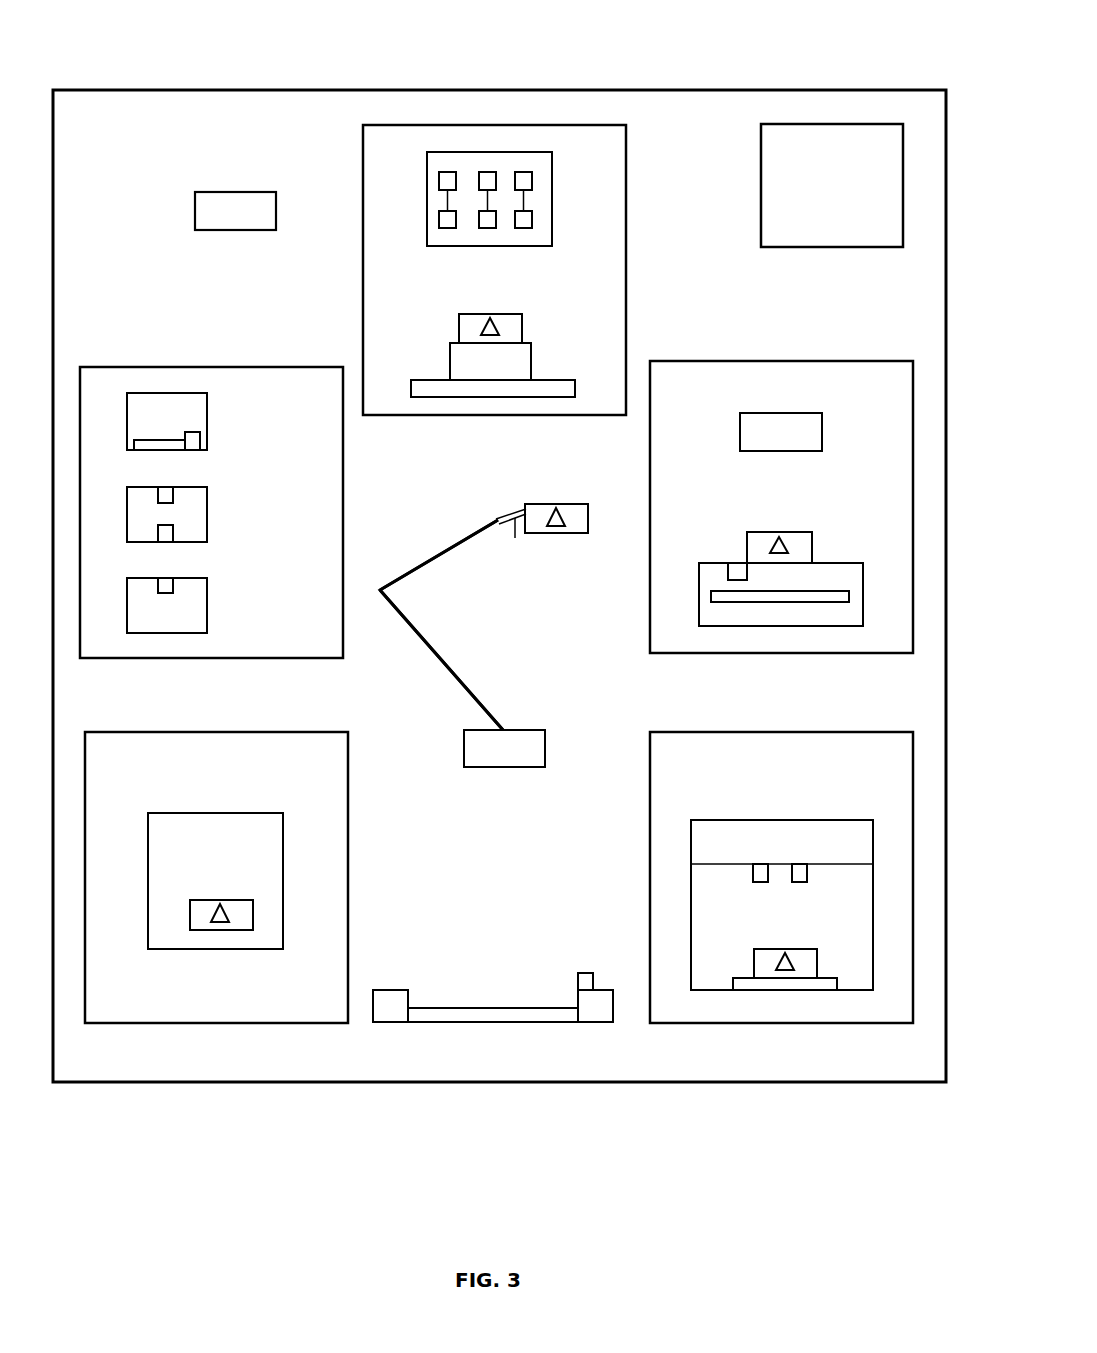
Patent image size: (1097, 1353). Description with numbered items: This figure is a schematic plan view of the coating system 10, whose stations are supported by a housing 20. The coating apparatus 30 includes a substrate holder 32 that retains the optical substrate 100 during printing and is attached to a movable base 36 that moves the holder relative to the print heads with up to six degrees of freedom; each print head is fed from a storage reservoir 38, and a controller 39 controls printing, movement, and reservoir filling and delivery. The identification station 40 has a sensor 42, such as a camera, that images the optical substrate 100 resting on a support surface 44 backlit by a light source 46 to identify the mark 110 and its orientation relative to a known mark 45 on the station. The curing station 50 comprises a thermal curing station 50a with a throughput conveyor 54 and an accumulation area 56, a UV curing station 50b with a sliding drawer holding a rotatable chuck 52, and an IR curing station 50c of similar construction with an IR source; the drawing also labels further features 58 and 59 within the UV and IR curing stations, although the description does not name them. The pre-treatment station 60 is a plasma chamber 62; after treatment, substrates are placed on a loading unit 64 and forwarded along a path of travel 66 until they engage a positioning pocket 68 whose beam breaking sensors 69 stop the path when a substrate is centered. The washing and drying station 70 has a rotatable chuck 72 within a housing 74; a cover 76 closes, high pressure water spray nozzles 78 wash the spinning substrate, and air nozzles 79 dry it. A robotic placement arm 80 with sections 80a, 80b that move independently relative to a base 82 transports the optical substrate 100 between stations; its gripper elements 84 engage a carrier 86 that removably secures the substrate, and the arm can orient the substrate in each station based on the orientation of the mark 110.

The coating system 10 is at (838, 56).
The housing 20 is at (705, 89).
The coating apparatus 30 is at (626, 150).
The substrate holder 32 is at (523, 362).
The movable base 36 is at (430, 390).
The storage reservoir 38 is at (448, 182).
The controller 39 is at (208, 208).
The identification station 40 is at (808, 360).
The sensor 42 is at (752, 430).
The support surface 44 is at (817, 558).
The known mark 45 is at (735, 570).
The light source 46 is at (792, 595).
The curing station 50 is at (225, 367).
The thermal curing station 50a is at (207, 438).
The UV curing station 50b is at (207, 512).
The IR curing station 50c is at (207, 605).
The rotatable chuck 52 is at (167, 532).
The throughput conveyor 54 is at (159, 440).
The accumulation area 56 is at (193, 440).
The upper latch 58 is at (167, 495).
The handle 59 is at (165, 583).
The pre-treatment station 60 is at (348, 783).
The plasma chamber 62 is at (203, 813).
The loading unit 64 is at (393, 1007).
The path of travel 66 is at (497, 1018).
The positioning pocket 68 is at (585, 1005).
The beam breaking sensor 69 is at (583, 977).
The washing and drying station 70 is at (648, 785).
The rotatable chuck 72 is at (708, 820).
The housing 74 is at (775, 983).
The cover 76 is at (847, 847).
The high pressure water spray nozzle 78 is at (763, 863).
The air nozzle 79 is at (801, 863).
The robotic placement arm 80 is at (584, 616).
The section 80a is at (442, 658).
The section 80b is at (438, 558).
The base 82 is at (497, 755).
The gripper element 84 is at (512, 509).
The carrier 86 is at (509, 547).
The optical substrate 100 is at (503, 313).
The mark 110 is at (485, 323).